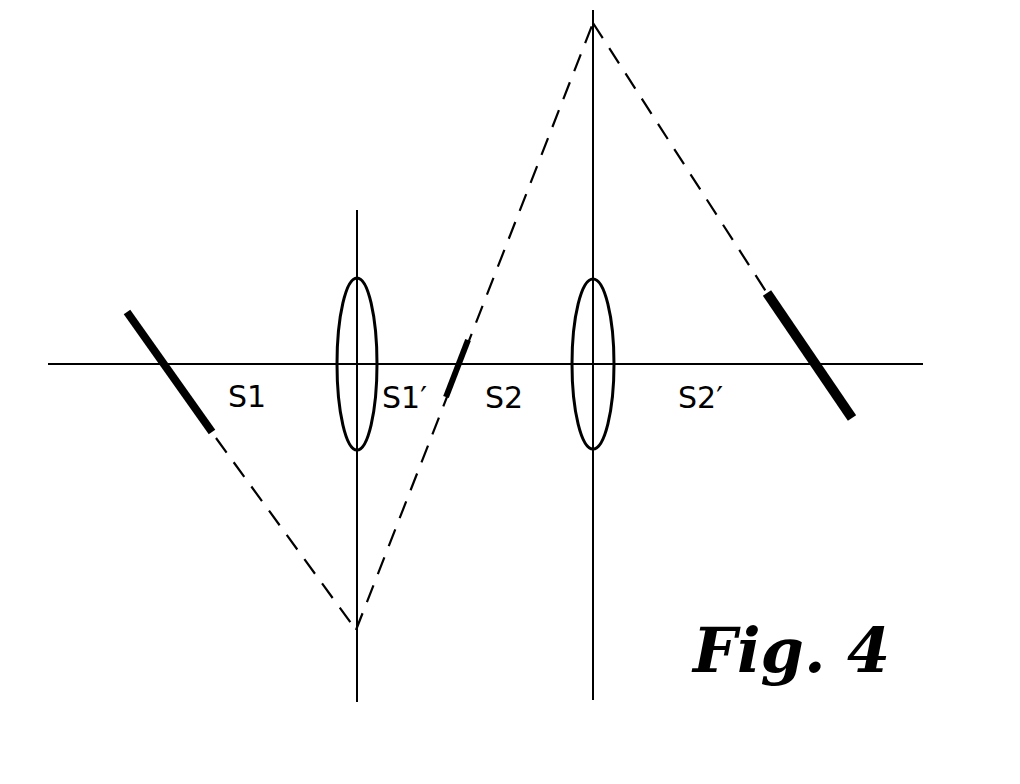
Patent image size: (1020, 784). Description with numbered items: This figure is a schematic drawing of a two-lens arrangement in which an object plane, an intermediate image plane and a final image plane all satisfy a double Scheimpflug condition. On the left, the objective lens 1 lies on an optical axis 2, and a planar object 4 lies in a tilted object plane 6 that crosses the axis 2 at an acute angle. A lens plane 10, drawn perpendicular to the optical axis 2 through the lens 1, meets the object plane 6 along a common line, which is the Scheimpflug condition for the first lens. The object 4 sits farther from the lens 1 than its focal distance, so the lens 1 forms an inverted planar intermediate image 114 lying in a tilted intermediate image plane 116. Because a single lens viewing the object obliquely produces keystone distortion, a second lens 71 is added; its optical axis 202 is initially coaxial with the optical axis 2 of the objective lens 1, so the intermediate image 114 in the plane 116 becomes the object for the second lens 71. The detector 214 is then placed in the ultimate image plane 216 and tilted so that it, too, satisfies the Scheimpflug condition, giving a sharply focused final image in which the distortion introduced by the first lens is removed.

The lens 1 is at (352, 282).
The optical axis 2 is at (63, 363).
The planar object 4 is at (147, 332).
The object plane 6 is at (289, 542).
The lens plane 10 is at (356, 505).
The second lens 71 is at (606, 300).
The intermediate image 114 is at (462, 349).
The intermediate image plane 116 is at (419, 462).
The optical axis of the second lens 202 is at (878, 364).
The detector 214 is at (783, 303).
The ultimate image plane 216 is at (703, 189).